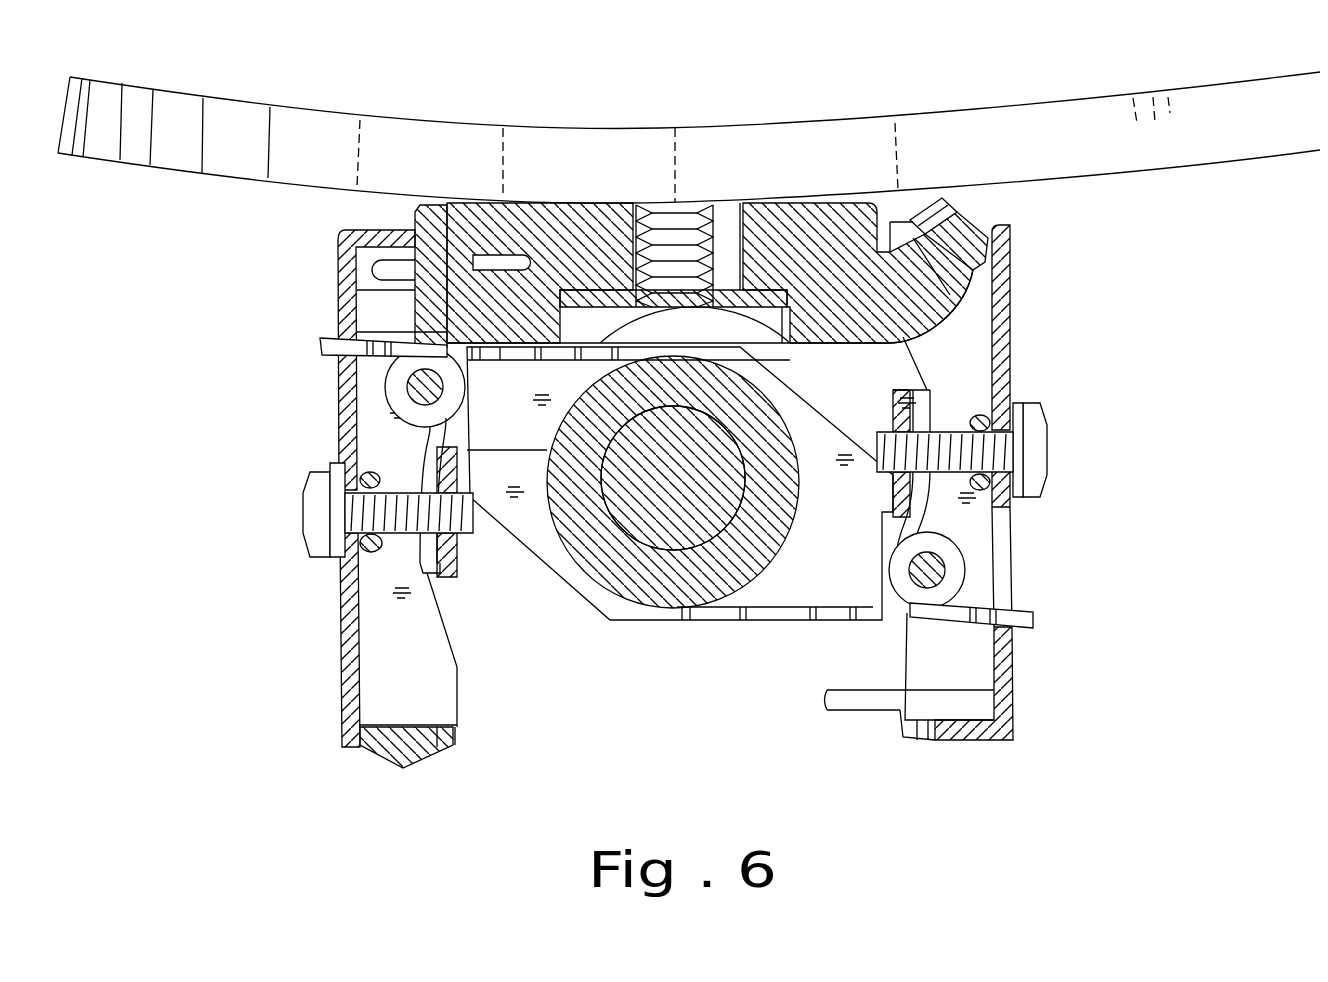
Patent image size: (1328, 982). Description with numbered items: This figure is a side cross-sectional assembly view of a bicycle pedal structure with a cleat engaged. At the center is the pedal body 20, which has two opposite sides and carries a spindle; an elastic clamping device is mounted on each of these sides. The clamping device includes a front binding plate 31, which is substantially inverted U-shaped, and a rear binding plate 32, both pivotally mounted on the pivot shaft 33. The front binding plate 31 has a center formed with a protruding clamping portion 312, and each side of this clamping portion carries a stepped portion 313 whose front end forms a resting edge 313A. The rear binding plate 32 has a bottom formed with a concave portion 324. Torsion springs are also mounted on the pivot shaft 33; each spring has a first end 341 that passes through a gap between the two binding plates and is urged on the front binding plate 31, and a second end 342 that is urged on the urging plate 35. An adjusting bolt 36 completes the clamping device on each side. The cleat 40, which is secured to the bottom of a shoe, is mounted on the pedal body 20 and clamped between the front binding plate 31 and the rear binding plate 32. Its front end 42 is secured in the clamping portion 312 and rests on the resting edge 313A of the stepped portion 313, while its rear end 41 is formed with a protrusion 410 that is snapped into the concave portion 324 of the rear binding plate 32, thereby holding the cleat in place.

The pedal body 20 is at (820, 437).
The front binding plate 31 is at (352, 228).
The rear binding plate 32 is at (997, 220).
The pivot shaft 33 is at (410, 390).
The urging plate 35 is at (458, 547).
The adjusting bolt 36 is at (314, 510).
The cleat 40 is at (822, 222).
The rear end 41 is at (972, 322).
The front end 42 is at (392, 298).
The clamping portion 312 is at (383, 230).
The stepped portion 313 is at (448, 275).
The resting edge 313A is at (507, 262).
The concave portion 324 is at (952, 205).
The first end 341 is at (320, 341).
The second end 342 is at (428, 574).
The protrusion 410 is at (968, 263).